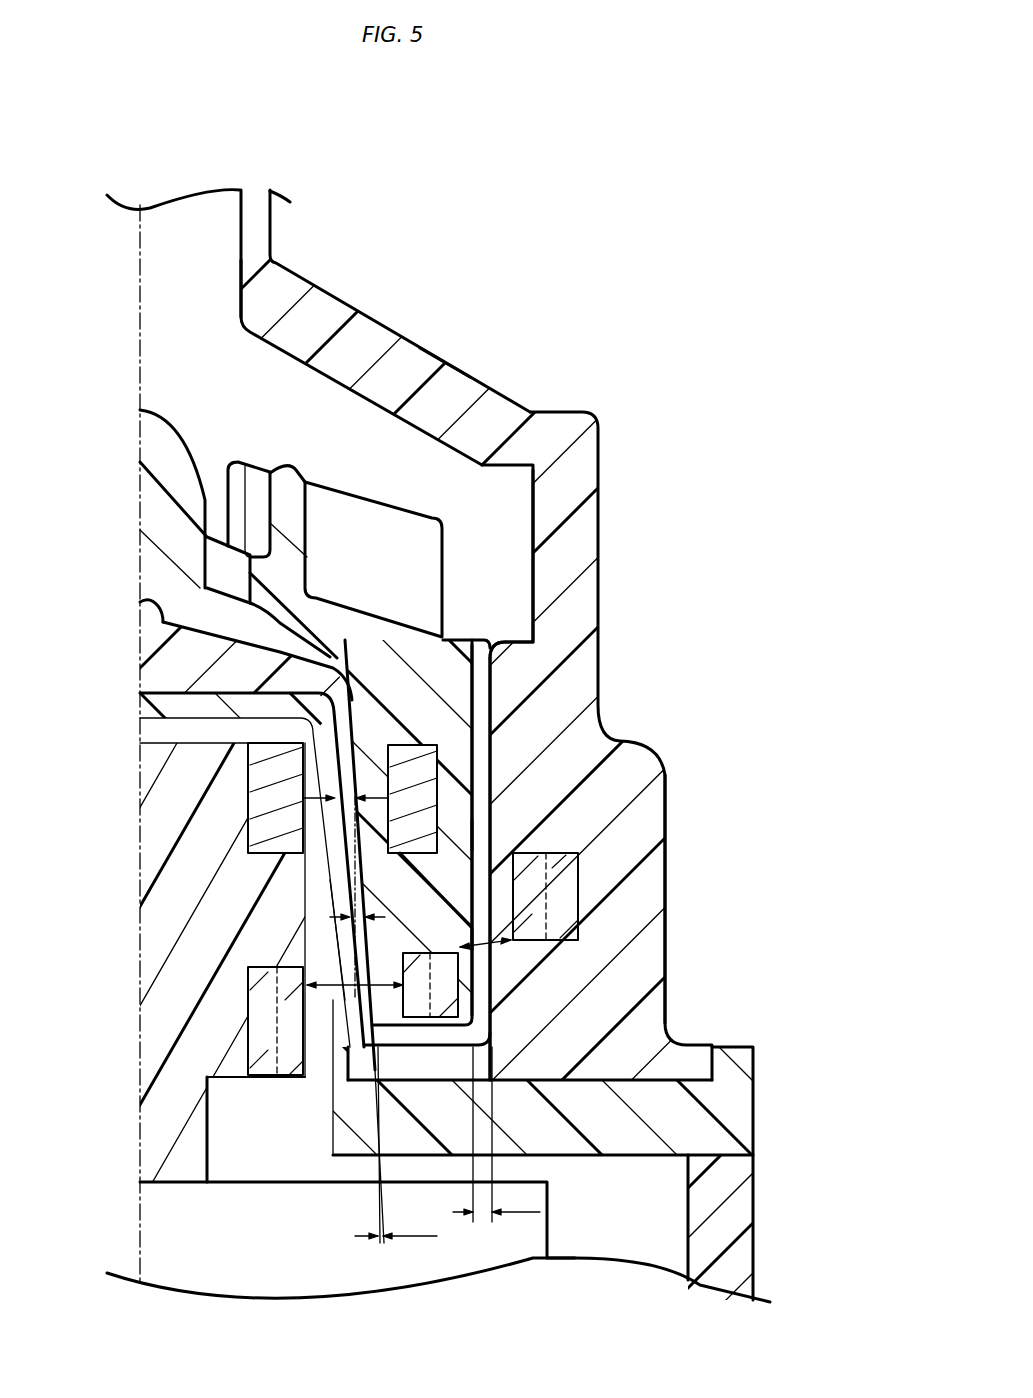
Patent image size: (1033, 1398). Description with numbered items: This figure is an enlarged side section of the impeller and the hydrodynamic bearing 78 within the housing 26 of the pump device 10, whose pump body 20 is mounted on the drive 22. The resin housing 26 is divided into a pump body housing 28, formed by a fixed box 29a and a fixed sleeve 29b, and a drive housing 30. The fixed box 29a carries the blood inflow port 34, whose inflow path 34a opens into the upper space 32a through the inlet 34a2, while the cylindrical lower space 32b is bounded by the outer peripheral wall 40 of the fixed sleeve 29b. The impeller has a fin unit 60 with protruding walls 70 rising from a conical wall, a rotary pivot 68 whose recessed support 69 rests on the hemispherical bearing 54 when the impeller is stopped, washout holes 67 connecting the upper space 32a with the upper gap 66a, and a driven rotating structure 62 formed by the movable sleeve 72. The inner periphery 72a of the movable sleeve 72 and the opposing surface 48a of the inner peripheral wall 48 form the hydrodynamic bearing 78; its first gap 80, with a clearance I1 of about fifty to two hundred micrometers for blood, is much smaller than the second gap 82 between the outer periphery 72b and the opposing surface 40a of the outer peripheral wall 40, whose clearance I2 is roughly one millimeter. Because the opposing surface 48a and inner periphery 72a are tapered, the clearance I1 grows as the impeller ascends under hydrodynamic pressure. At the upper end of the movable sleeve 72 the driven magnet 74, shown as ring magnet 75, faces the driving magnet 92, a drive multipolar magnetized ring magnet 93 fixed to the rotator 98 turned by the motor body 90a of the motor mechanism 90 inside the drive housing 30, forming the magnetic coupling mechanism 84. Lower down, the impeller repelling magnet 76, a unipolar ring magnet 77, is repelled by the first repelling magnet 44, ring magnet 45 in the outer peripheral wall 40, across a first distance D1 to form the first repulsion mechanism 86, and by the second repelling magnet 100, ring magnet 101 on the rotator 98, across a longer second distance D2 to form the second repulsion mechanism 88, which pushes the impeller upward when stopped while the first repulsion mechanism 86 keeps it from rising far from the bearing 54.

The pump device 10 is at (516, 237).
The pump body 20 is at (580, 395).
The drive 22 is at (762, 1112).
The housing 26 is at (516, 699).
The pump body housing 28 is at (598, 508).
The fixed box 29a is at (458, 368).
The fixed sleeve 29b is at (667, 803).
The drive housing 30 is at (740, 1058).
The upper space 32a is at (500, 571).
The lower space 32b is at (426, 1047).
The blood inflow port 34 is at (271, 238).
The inflow path 34a is at (203, 210).
The inlet 34a2 is at (240, 303).
The outer peripheral wall 40 is at (582, 683).
The opposing surface 40a is at (480, 660).
The first repelling magnet 44 is at (575, 898).
The outside inner and outer peripheral unipolar magnetized ring magnet 45 is at (625, 896).
The inner peripheral wall 48 is at (347, 862).
The opposing surface 48a is at (408, 873).
The bearing 54 is at (153, 618).
The fin unit 60 is at (292, 462).
The driven rotating structure 62 is at (516, 699).
The upper gap 66a is at (275, 637).
The washout holes 67 is at (220, 560).
The rotary pivot 68 is at (155, 415).
The recessed support 69 is at (137, 609).
The protruding walls 70 is at (349, 493).
The movable sleeve 72 is at (475, 1010).
The inner periphery 72a is at (347, 907).
The outer periphery 72b is at (480, 693).
The driven magnet 74 is at (428, 767).
The magnet portion 75 is at (468, 799).
The impeller repelling magnet 76 is at (457, 977).
The impeller inner and outer peripheral unipolar magnetized ring magnet 77 is at (488, 985).
The hydrodynamic bearing 78 is at (382, 905).
The first gap 80 is at (345, 660).
The second gap 82 is at (484, 833).
The magnetic coupling mechanism 84 is at (367, 790).
The first repulsion mechanism 86 is at (472, 939).
The second repulsion mechanism 88 is at (331, 1005).
The motor mechanism 90 is at (385, 1050).
The motor body 90a is at (282, 1306).
The driving magnet 92 is at (253, 790).
The drive multipolar magnetized ring magnet 93 is at (186, 798).
The rotator 98 is at (172, 975).
The second repelling magnet 100 is at (265, 1056).
The inside inner and outer peripheral unipolar magnetized ring magnet 101 is at (264, 1057).
The first distance D1 is at (473, 950).
The second distance D2 is at (342, 972).
The clearance of first gap I1 is at (396, 1224).
The clearance of second gap I2 is at (496, 1134).